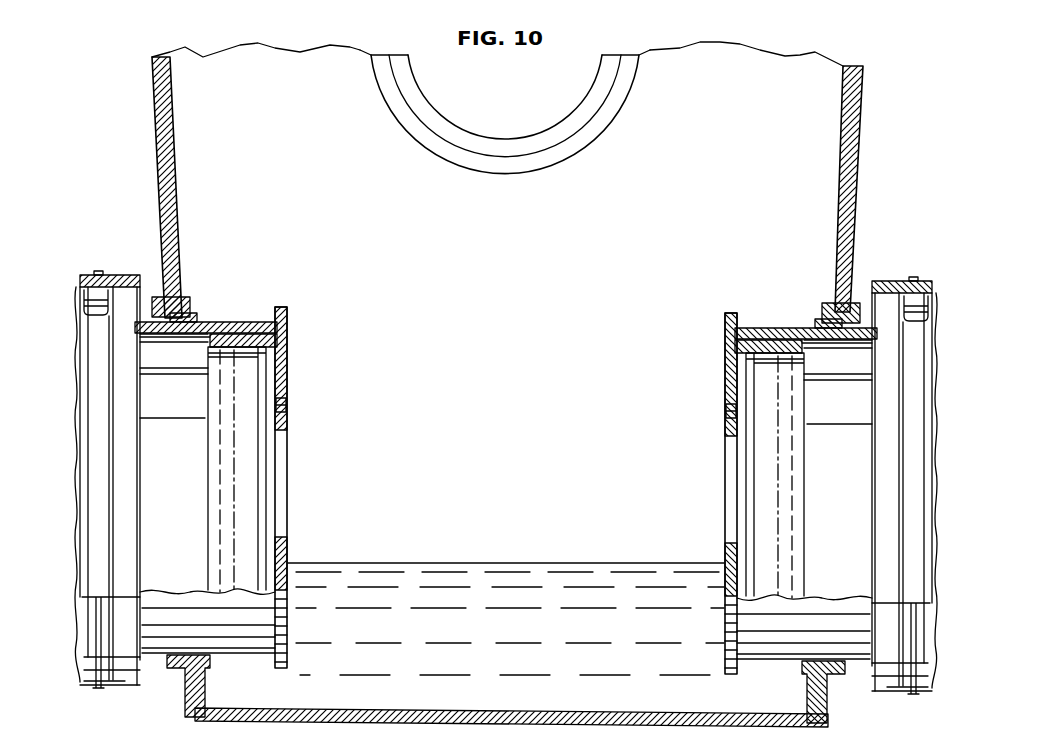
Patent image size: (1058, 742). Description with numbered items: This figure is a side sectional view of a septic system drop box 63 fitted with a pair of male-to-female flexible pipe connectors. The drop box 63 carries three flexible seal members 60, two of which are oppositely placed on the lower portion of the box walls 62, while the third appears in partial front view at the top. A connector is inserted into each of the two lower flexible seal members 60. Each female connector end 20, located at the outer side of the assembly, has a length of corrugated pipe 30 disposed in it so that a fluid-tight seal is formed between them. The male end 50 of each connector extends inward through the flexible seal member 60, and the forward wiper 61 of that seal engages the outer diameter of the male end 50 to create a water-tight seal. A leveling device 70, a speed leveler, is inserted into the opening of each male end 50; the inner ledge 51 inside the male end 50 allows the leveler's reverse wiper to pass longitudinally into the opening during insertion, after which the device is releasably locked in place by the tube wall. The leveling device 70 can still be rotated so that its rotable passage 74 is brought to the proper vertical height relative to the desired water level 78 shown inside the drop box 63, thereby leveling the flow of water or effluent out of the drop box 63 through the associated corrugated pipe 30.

The female connector end 20 is at (130, 253).
The corrugated pipe 30 is at (95, 328).
The male end 50 is at (240, 306).
The inner ledge 51 is at (277, 318).
The flexible seal member 60 is at (398, 98).
The forward wiper 61 is at (225, 301).
The box walls 62 is at (166, 118).
The septic system drop box 63 is at (266, 97).
The leveling device 70 is at (300, 348).
The rotable passage 74 is at (287, 405).
The water level 78 is at (470, 563).